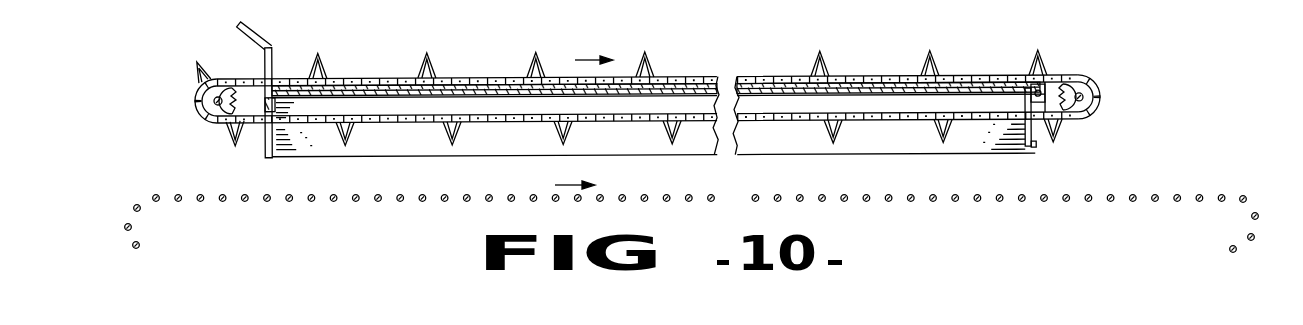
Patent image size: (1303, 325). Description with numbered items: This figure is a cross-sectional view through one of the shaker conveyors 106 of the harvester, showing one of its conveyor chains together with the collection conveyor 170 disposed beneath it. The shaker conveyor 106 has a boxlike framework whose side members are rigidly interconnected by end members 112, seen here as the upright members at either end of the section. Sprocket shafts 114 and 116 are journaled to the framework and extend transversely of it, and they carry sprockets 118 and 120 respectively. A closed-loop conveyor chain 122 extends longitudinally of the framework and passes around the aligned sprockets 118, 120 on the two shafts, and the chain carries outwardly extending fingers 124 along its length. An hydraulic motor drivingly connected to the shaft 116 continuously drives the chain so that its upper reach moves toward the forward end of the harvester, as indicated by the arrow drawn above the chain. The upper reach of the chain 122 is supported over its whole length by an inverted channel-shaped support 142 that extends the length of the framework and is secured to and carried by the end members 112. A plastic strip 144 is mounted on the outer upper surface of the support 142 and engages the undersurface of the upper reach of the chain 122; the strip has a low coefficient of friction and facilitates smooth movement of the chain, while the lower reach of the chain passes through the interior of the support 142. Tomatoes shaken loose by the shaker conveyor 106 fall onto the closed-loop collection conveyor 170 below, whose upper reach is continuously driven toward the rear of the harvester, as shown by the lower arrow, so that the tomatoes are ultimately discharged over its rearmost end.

The shaker conveyor 106 is at (688, 66).
The end member 112 is at (272, 58).
The sprocket shaft 114 is at (214, 100).
The sprocket shaft 116 is at (1084, 97).
The sprocket 118 is at (212, 116).
The sprocket 120 is at (1078, 90).
The conveyor chain 122 is at (497, 79).
The finger 124 is at (321, 62).
The support 142 is at (307, 151).
The plastic strip 144 is at (351, 90).
The collection conveyor 170 is at (177, 196).